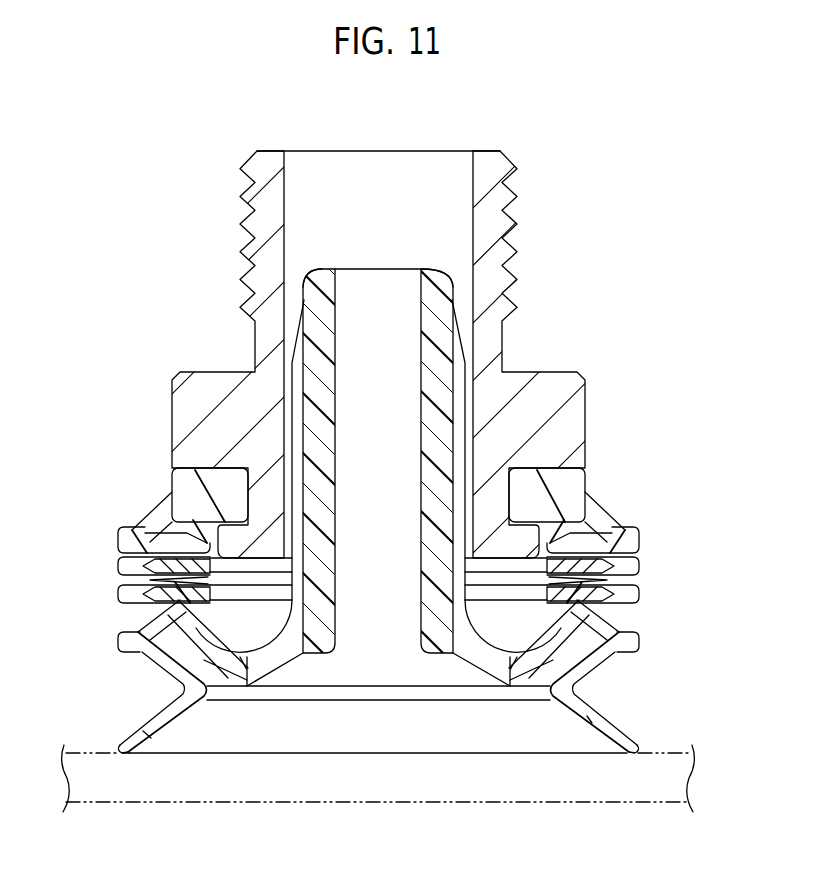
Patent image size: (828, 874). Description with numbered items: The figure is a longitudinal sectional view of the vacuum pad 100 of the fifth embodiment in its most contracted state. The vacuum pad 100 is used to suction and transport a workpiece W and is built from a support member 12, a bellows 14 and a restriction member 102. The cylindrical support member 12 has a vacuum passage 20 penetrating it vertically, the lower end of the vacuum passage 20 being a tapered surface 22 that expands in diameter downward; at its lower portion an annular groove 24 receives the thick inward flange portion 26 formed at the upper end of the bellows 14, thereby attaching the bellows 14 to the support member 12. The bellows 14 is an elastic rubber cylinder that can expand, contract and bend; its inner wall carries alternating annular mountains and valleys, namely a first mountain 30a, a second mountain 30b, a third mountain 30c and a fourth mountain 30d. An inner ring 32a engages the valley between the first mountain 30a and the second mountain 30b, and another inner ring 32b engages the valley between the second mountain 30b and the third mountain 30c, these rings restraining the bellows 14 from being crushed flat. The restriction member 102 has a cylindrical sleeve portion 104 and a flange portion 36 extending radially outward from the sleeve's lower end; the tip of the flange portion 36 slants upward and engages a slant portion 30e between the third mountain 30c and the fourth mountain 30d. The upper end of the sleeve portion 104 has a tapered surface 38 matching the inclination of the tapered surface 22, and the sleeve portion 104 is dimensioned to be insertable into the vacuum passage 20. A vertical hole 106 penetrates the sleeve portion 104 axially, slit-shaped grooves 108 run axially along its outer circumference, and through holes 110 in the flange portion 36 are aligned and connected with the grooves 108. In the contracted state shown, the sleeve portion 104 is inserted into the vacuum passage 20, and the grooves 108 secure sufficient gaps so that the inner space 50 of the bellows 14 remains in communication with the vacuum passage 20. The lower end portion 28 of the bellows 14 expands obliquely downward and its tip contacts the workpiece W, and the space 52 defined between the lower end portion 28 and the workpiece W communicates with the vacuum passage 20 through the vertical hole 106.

The vacuum pad 100 is at (196, 160).
The support member 12 is at (224, 214).
The vacuum passage 20 is at (385, 160).
The sleeve portion 104 is at (432, 385).
The vertical hole 106 is at (372, 296).
The restriction member 102 is at (355, 268).
The tapered surface 38 is at (450, 270).
The grooves 108 is at (301, 357).
The tapered surface 22 is at (250, 528).
The annular groove 24 is at (212, 497).
The inward flange portion 26 is at (553, 497).
The bellows 14 is at (104, 545).
The first mountain 30a is at (197, 545).
The second mountain 30b is at (200, 573).
The third mountain 30c is at (198, 612).
The fourth mountain 30d is at (197, 690).
The slant portion 30e is at (592, 662).
The inner ring 32a is at (607, 565).
The inner ring 32b is at (645, 590).
The flange portion 36 is at (592, 647).
The inner space 50 is at (205, 637).
The through holes 110 is at (275, 655).
The lower end portion 28 is at (610, 732).
The space 52 is at (240, 735).
The workpiece W is at (381, 780).